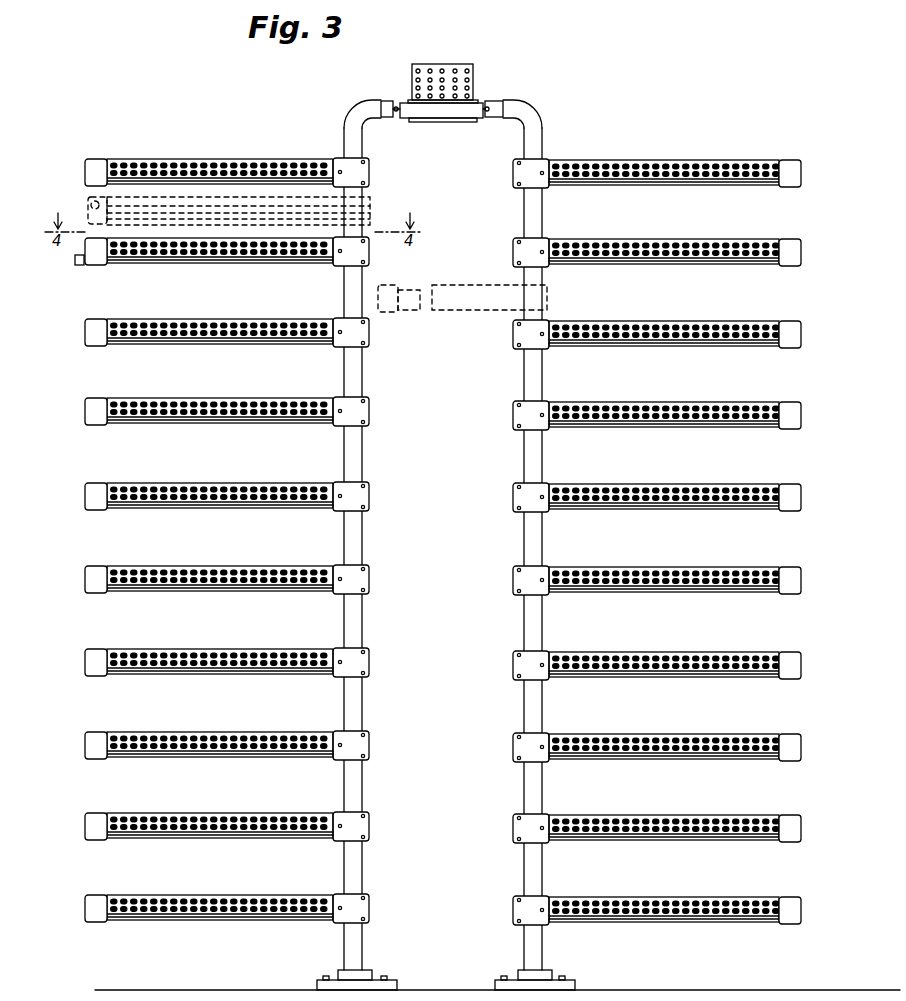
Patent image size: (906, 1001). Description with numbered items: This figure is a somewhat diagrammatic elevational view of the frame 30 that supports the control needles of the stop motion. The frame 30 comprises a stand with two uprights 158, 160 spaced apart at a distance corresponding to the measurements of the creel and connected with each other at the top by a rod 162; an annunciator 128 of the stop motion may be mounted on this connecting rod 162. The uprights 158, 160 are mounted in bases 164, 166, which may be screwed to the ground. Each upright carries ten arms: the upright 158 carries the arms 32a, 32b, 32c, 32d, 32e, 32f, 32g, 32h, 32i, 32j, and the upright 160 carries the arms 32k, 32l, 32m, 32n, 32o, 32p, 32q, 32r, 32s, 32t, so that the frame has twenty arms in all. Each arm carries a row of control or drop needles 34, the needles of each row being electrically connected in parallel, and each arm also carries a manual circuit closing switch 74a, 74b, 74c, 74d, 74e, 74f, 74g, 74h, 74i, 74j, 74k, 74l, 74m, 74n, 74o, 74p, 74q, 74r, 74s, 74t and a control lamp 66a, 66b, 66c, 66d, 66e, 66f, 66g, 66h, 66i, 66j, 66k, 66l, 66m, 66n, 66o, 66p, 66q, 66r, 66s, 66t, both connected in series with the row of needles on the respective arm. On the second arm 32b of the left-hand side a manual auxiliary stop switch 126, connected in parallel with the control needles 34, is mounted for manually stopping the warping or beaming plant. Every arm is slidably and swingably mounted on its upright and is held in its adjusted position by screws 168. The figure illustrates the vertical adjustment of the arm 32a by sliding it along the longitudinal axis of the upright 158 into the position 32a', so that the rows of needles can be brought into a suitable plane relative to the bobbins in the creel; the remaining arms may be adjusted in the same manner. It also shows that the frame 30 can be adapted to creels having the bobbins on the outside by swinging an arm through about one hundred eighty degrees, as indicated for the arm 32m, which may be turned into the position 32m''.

The frame 30 is at (380, 626).
The arm 32a is at (220, 155).
The arm 32b is at (190, 238).
The arm 32c is at (222, 319).
The arm 32d is at (205, 398).
The arm 32e is at (205, 483).
The arm 32f is at (205, 566).
The arm 32g is at (205, 649).
The arm 32h is at (205, 732).
The arm 32i is at (192, 813).
The arm 32j is at (170, 895).
The arm 32k is at (728, 160).
The arm 32l is at (668, 239).
The arm 32m is at (664, 318).
The arm 32n is at (708, 402).
The arm 32o is at (700, 484).
The arm 32p is at (702, 567).
The arm 32q is at (700, 652).
The arm 32r is at (696, 734).
The arm 32s is at (688, 815).
The arm 32t is at (694, 897).
The adjusted position of arm 32a' is at (229, 203).
The swung position of arm 32m'' is at (462, 313).
The control needles 34 is at (142, 160).
The control lamp 66a is at (92, 163).
The control lamp 66b is at (90, 250).
The control lamp 66c is at (92, 322).
The control lamp 66d is at (90, 402).
The control lamp 66e is at (90, 487).
The control lamp 66f is at (90, 570).
The control lamp 66g is at (90, 653).
The control lamp 66h is at (90, 736).
The control lamp 66i is at (90, 817).
The control lamp 66j is at (90, 899).
The control lamp 66k is at (826, 150).
The control lamp 66l is at (818, 230).
The control lamp 66m is at (826, 312).
The control lamp 66n is at (826, 394).
The control lamp 66o is at (816, 478).
The control lamp 66p is at (820, 556).
The control lamp 66q is at (820, 642).
The control lamp 66r is at (818, 724).
The control lamp 66s is at (818, 804).
The control lamp 66t is at (818, 887).
The manual circuit closing switch 74a is at (86, 175).
The manual circuit closing switch 74b is at (86, 258).
The manual circuit closing switch 74c is at (86, 338).
The manual circuit closing switch 74d is at (86, 418).
The manual circuit closing switch 74e is at (86, 502).
The manual circuit closing switch 74f is at (86, 586).
The manual circuit closing switch 74g is at (86, 670).
The manual circuit closing switch 74h is at (86, 753).
The manual circuit closing switch 74i is at (86, 835).
The manual circuit closing switch 74j is at (86, 918).
The manual circuit closing switch 74k is at (802, 176).
The manual circuit closing switch 74l is at (802, 255).
The manual circuit closing switch 74m is at (802, 337).
The manual circuit closing switch 74n is at (802, 419).
The manual circuit closing switch 74o is at (802, 501).
The manual circuit closing switch 74p is at (802, 584).
The manual circuit closing switch 74q is at (802, 669).
The manual circuit closing switch 74r is at (802, 751).
The manual circuit closing switch 74s is at (802, 832).
The manual circuit closing switch 74t is at (802, 914).
The manual auxiliary stop switch 126 is at (79, 266).
The annunciator 128 is at (466, 56).
The upright 158 is at (362, 156).
The upright 160 is at (542, 146).
The rod 162 is at (498, 106).
The base 164 is at (372, 976).
The base 166 is at (552, 974).
The screws 168 is at (366, 182).